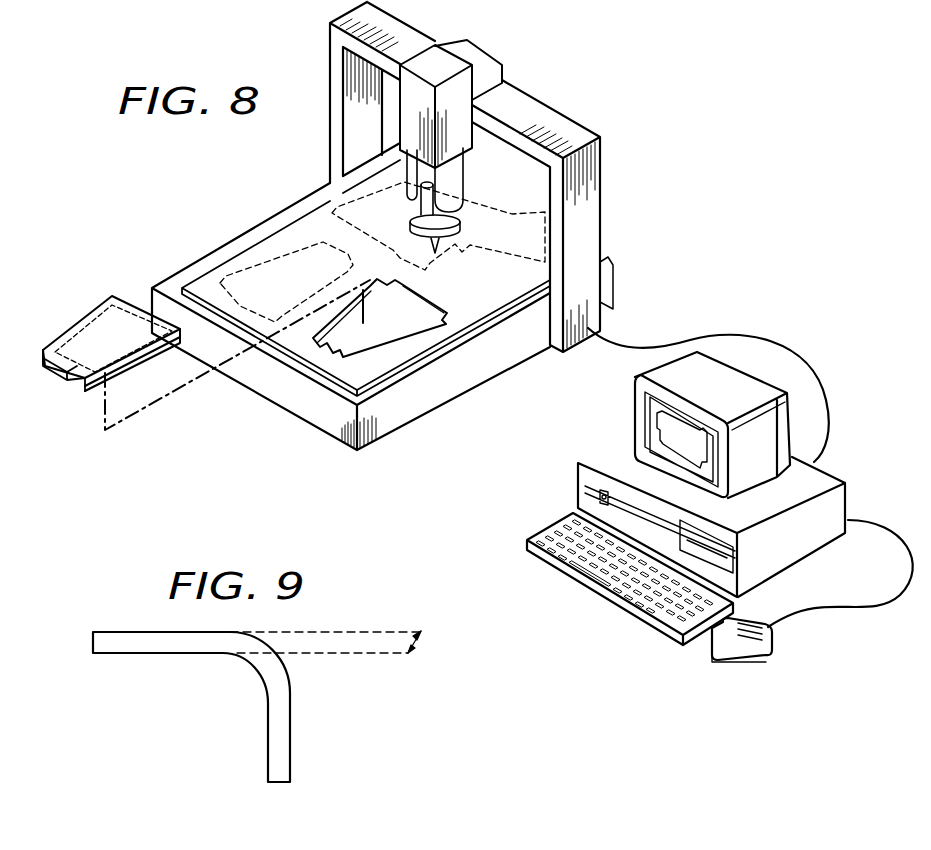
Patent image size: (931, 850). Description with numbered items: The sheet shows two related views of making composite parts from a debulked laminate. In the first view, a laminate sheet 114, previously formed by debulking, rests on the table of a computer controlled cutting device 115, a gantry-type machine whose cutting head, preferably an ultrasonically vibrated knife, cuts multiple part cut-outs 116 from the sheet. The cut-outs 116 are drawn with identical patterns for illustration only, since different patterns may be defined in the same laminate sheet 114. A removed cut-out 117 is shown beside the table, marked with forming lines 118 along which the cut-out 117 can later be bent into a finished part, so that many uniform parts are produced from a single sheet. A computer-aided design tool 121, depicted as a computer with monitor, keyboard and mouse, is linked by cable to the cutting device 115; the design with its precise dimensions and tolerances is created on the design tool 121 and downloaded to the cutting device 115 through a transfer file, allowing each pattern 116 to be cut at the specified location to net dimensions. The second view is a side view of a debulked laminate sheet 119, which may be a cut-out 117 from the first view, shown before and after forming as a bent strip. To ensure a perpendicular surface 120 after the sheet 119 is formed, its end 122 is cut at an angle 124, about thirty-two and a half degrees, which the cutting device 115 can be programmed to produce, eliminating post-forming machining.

In FIG. 8, the laminate sheet 114 is at (228, 262).
In FIG. 8, the computer controlled cutting device 115 is at (555, 118).
In FIG. 8, the part cut-outs 116 is at (283, 257).
In FIG. 8, the removed cut-out 117 is at (108, 327).
In FIG. 8, the forming lines 118 is at (127, 302).
In FIG. 9, the debulked laminate sheet 119 is at (120, 630).
In FIG. 9, the perpendicular surface 120 is at (280, 787).
In FIG. 8, the computer-aided design tool 121 is at (830, 477).
In FIG. 9, the end 122 is at (373, 628).
In FIG. 9, the angle 124 is at (399, 650).